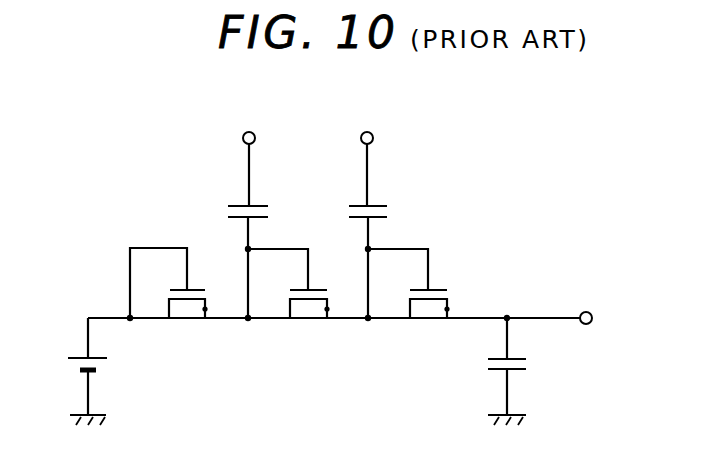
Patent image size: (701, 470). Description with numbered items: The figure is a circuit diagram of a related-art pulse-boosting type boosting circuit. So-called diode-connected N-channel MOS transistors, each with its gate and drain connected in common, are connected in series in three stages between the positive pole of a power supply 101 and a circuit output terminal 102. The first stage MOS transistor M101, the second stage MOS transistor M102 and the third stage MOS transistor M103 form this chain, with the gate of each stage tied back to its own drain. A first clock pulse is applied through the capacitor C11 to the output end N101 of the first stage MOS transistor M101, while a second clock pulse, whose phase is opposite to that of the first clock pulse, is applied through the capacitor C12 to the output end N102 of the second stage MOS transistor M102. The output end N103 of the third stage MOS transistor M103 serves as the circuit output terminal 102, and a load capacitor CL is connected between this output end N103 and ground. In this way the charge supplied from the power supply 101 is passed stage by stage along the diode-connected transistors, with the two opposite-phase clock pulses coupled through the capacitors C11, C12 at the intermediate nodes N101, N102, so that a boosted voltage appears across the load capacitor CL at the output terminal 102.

The power supply 101 is at (72, 362).
The circuit output terminal 102 is at (588, 312).
The first stage MOS transistor M101 is at (170, 300).
The second stage MOS transistor M102 is at (292, 300).
The third stage MOS transistor M103 is at (413, 300).
The capacitor C11 is at (233, 208).
The capacitor C12 is at (355, 208).
The output end of the first stage MOS transistor N101 is at (248, 322).
The output end of the second stage MOS transistor N102 is at (368, 322).
The output end of the third stage MOS transistor N103 is at (507, 314).
The load capacitor CL is at (525, 371).